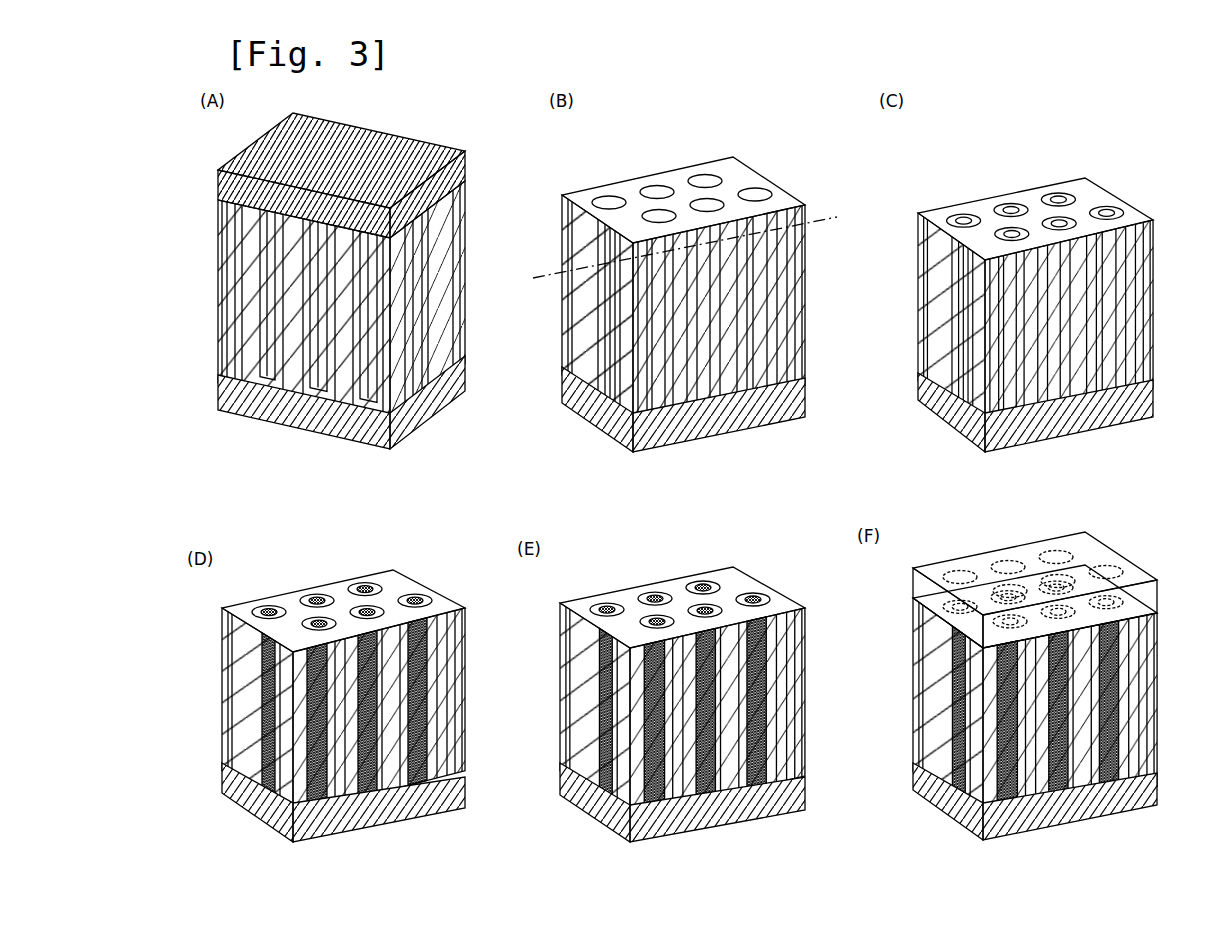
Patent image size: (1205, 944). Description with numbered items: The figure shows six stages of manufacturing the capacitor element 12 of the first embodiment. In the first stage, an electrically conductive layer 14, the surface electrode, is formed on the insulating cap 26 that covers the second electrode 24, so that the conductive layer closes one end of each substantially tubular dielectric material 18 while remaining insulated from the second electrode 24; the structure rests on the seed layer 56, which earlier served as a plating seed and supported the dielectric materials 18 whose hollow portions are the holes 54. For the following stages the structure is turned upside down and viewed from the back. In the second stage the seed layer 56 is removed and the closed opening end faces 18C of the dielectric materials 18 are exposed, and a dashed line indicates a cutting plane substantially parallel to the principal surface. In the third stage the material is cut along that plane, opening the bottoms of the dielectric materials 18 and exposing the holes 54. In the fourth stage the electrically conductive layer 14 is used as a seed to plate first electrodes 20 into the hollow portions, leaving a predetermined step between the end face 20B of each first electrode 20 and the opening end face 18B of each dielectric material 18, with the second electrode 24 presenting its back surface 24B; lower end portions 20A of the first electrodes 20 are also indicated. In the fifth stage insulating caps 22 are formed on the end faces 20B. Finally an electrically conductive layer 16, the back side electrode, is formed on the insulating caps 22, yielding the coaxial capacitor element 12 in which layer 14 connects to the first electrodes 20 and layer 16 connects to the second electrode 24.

The capacitor element 12 is at (1134, 542).
The electrically conductive layer 14 is at (350, 123).
The electrically conductive layer 16 is at (1017, 543).
The dielectric material 18 is at (226, 240).
The opening end face 18B is at (292, 592).
The closed opening end face 18C is at (608, 196).
The first electrode 20 is at (262, 763).
The lower end of filler 20A is at (262, 812).
The end face 20B is at (277, 597).
The insulating cap 22 is at (606, 614).
The second electrode 24 is at (240, 270).
The back surface 24B is at (394, 575).
The insulating cap 26 is at (227, 213).
The hole 54 is at (270, 338).
The seed layer 56 is at (425, 405).